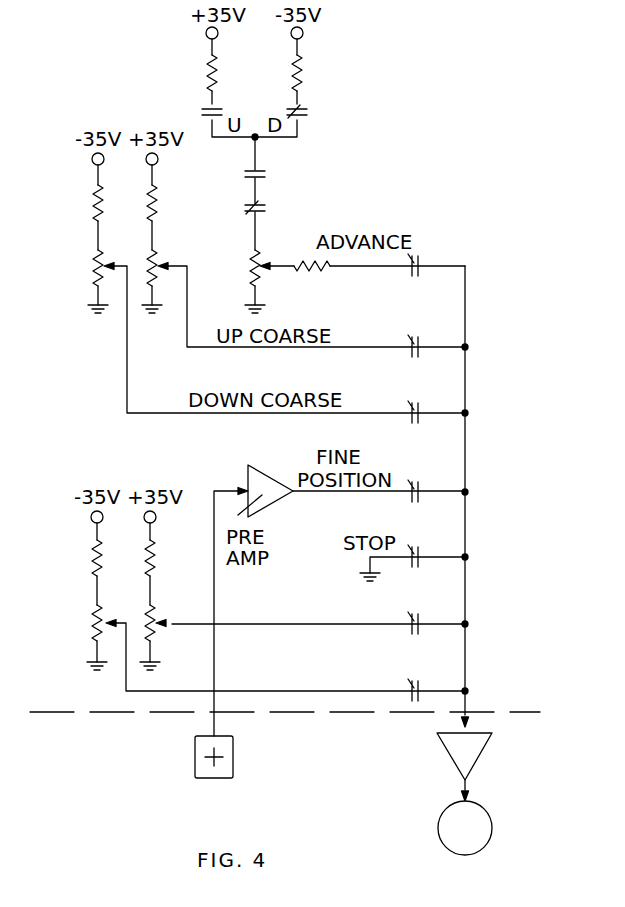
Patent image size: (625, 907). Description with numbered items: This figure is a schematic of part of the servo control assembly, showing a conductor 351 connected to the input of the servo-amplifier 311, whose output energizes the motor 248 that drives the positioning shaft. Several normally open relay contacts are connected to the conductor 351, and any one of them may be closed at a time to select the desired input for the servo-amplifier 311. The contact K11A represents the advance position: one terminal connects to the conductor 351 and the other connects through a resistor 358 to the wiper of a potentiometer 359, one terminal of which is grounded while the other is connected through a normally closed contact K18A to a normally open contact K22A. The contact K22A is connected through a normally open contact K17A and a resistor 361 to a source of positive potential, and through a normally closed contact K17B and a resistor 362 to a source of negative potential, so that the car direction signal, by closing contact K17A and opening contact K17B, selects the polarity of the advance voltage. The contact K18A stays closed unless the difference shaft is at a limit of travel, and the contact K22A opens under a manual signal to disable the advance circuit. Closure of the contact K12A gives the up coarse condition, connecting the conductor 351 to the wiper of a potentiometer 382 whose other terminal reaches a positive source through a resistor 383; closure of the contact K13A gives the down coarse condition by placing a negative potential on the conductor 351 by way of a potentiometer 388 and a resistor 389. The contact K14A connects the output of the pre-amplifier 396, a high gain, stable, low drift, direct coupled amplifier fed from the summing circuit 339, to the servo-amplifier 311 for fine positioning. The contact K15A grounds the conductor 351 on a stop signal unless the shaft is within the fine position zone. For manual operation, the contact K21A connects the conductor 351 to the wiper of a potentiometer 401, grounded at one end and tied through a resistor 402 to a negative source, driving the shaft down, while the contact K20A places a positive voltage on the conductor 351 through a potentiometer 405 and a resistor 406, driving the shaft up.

The resistor 361 is at (208, 71).
The resistor 362 is at (302, 76).
The normally open contact K17A is at (202, 111).
The normally closed contact K17B is at (307, 112).
The normally open contact K22A is at (264, 175).
The normally closed contact K18A is at (264, 210).
The resistor 389 is at (93, 201).
The potentiometer 388 is at (93, 270).
The resistor 383 is at (157, 210).
The potentiometer 382 is at (157, 270).
The potentiometer 359 is at (251, 272).
The resistor 358 is at (310, 270).
The contact K11A is at (411, 279).
The contact K12A is at (411, 335).
The conductor 351 is at (466, 310).
The contact K13A is at (414, 400).
The pre-amplifier 396 is at (246, 483).
The contact K14A is at (426, 472).
The contact K15A is at (426, 539).
The contact K20A is at (421, 609).
The contact K21A is at (421, 676).
The resistor 402 is at (92, 559).
The potentiometer 401 is at (90, 625).
The resistor 406 is at (154, 562).
The potentiometer 405 is at (156, 625).
The summing circuit 339 is at (233, 760).
The servo-amplifier 311 is at (480, 757).
The motor 248 is at (492, 821).